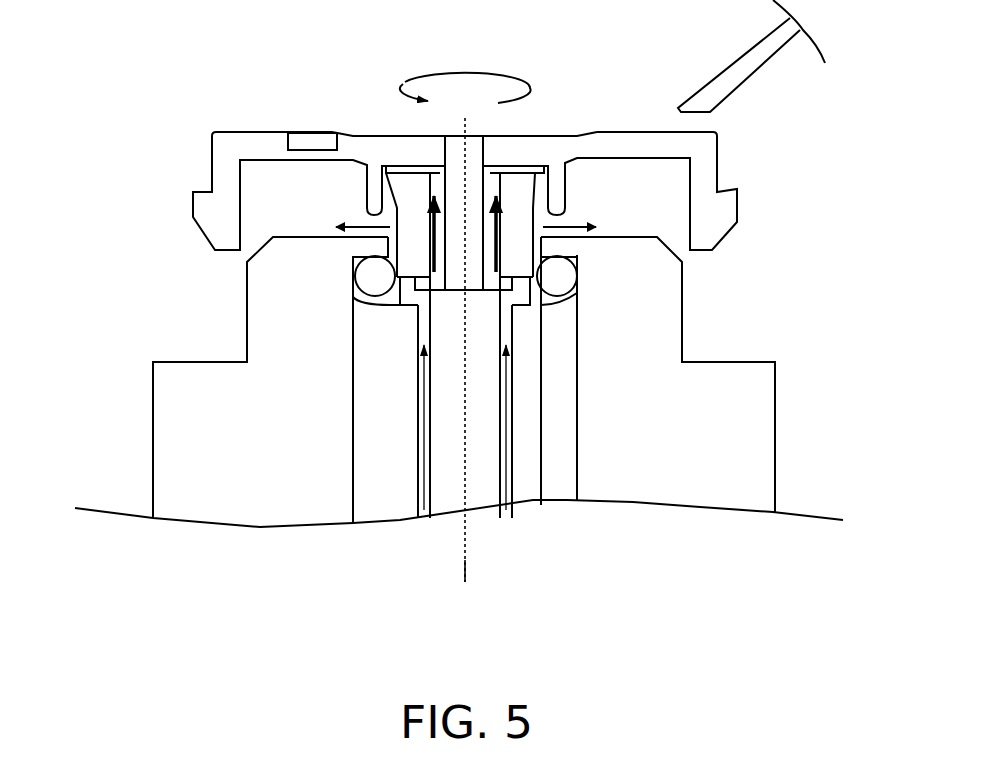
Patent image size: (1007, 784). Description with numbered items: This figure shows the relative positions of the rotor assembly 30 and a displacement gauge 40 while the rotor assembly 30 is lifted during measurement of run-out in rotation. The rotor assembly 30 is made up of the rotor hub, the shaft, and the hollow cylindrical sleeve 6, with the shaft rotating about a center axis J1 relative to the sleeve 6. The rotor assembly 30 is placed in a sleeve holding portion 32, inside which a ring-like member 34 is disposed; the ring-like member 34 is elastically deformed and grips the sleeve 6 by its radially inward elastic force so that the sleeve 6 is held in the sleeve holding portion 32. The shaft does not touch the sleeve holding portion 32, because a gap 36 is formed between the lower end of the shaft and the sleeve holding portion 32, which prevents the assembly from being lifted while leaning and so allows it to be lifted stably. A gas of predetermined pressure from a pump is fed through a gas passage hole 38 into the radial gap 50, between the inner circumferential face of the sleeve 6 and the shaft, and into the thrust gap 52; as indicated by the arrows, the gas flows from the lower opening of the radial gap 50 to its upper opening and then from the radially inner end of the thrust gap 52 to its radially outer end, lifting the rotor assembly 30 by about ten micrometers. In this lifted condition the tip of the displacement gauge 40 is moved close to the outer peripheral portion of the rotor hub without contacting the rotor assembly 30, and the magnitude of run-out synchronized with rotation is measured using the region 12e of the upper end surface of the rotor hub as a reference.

The sleeve 6 is at (513, 250).
The region of the upper end surface of the rotor hub 12e is at (637, 130).
The rotor assembly 30 is at (335, 97).
The sleeve holding portion 32 is at (377, 430).
The ring-like member 34 is at (373, 278).
The gap 36 is at (457, 297).
The gas passage hole 38 is at (497, 447).
The displacement gauge 40 is at (753, 60).
The radial gap 50 is at (500, 297).
The thrust gap 52 is at (417, 167).
The center axis J1 is at (461, 602).